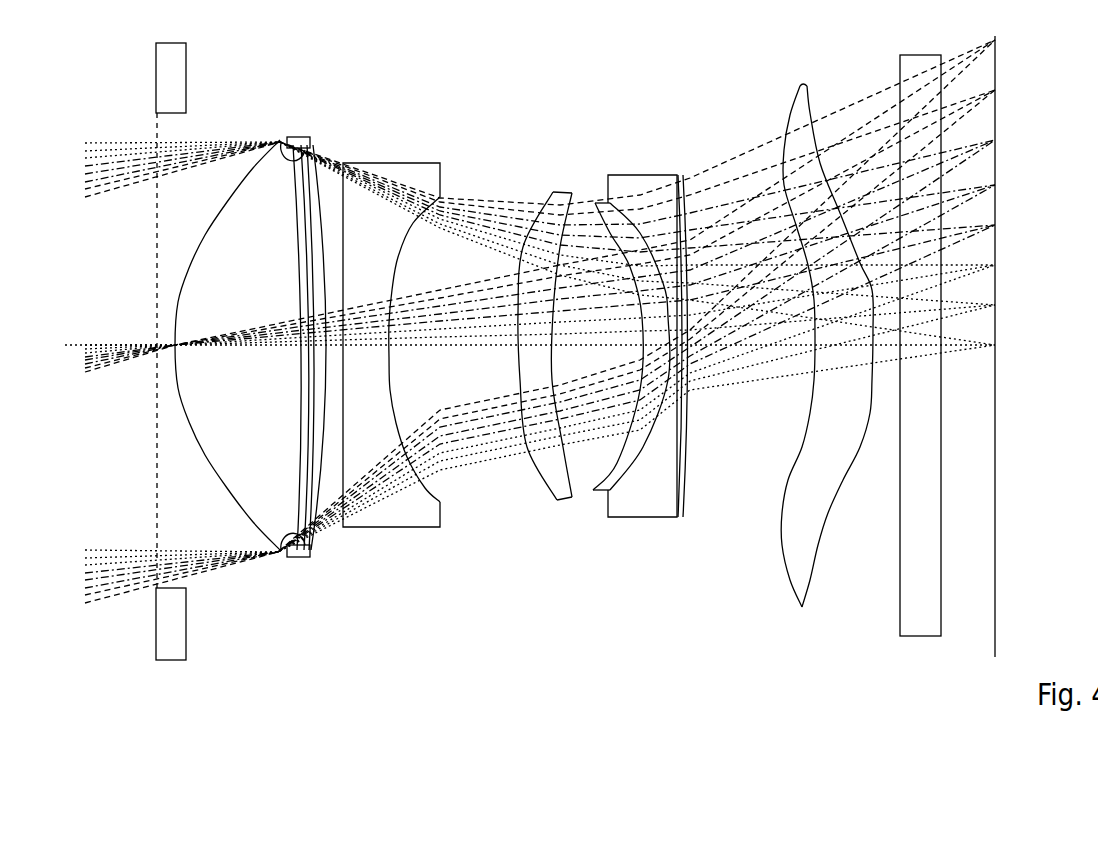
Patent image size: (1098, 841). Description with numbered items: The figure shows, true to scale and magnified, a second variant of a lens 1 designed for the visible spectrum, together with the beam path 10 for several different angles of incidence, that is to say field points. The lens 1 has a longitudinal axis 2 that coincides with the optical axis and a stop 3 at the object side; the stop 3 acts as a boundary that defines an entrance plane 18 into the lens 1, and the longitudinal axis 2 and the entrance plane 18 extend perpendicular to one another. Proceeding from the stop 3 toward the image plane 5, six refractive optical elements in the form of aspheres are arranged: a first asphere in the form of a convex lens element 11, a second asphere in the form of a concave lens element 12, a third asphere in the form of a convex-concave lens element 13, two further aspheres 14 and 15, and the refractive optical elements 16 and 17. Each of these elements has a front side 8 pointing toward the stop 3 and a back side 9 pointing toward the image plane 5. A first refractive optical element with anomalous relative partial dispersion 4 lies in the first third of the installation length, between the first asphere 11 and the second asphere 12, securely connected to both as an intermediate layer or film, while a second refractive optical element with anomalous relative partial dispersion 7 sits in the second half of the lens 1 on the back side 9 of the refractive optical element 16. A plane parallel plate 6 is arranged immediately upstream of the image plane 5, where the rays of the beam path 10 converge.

The lens 1 is at (417, 90).
The longitudinal axis 2 is at (77, 347).
The stop 3 is at (182, 77).
The first refractive optical element with anomalous relative partial dispersion 4 is at (292, 557).
The image plane 5 is at (995, 638).
The plane parallel plate 6 is at (917, 628).
The second refractive optical element with anomalous relative partial dispersion 7 is at (683, 517).
The front side 8 is at (280, 140).
The back side 9 is at (290, 137).
The beam path 10 is at (500, 183).
The first asphere 11 is at (263, 530).
The second asphere 12 is at (307, 560).
The third asphere 13 is at (390, 522).
The asphere 14 is at (563, 495).
The asphere 15 is at (595, 492).
The refractive optical element 16 is at (640, 513).
The refractive optical element 17 is at (800, 607).
The entrance plane 18 is at (155, 285).